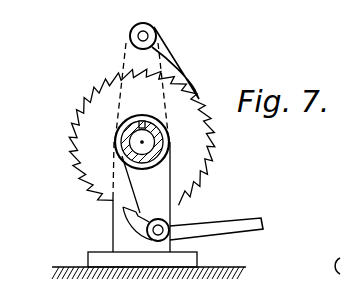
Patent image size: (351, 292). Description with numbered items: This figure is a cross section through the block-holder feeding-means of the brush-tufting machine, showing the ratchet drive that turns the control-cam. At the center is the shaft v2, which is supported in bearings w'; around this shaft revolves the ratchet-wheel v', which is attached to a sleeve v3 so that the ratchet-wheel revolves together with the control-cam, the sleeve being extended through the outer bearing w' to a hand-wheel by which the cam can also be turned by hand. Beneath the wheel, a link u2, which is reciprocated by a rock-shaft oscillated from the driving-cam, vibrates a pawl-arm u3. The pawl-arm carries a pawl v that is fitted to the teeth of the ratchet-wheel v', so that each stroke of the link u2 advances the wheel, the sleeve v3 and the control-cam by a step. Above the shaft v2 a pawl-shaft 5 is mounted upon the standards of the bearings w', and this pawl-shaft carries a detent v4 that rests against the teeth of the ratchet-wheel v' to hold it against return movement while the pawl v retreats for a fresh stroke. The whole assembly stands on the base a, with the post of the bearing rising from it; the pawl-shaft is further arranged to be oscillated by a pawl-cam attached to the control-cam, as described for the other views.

The pawl-shaft 5 is at (130, 36).
The detent v4 is at (176, 56).
The ratchet-wheel v' is at (126, 137).
The sleeve v3 is at (116, 143).
The shaft v2 is at (145, 142).
The pawl-arm u3 is at (130, 196).
The bearings w' is at (103, 223).
The pawl v is at (145, 234).
The link u2 is at (216, 216).
The base a is at (225, 266).